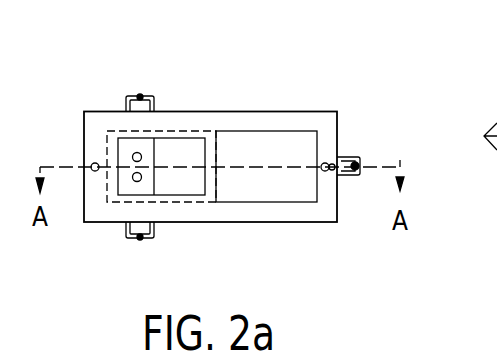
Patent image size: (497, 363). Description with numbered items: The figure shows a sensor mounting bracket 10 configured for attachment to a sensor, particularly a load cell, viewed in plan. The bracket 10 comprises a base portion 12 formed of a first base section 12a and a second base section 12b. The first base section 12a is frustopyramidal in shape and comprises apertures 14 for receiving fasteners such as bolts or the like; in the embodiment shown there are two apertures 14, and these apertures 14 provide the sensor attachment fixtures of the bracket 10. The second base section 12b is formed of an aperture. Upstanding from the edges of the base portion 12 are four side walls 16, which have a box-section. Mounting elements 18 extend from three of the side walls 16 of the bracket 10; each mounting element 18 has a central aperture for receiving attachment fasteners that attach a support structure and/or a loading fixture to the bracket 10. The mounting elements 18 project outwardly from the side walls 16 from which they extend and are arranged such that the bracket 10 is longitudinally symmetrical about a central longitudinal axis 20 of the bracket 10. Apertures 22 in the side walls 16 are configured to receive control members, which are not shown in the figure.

The sensor mounting bracket 10 is at (278, 83).
The base portion 12 is at (198, 203).
The first base section 12a is at (196, 193).
The second base section 12b is at (254, 157).
The apertures 14 is at (127, 190).
The side walls 16 is at (125, 212).
The mounting elements 18 is at (138, 94).
The central longitudinal axis 20 is at (78, 170).
The apertures 22 is at (93, 163).